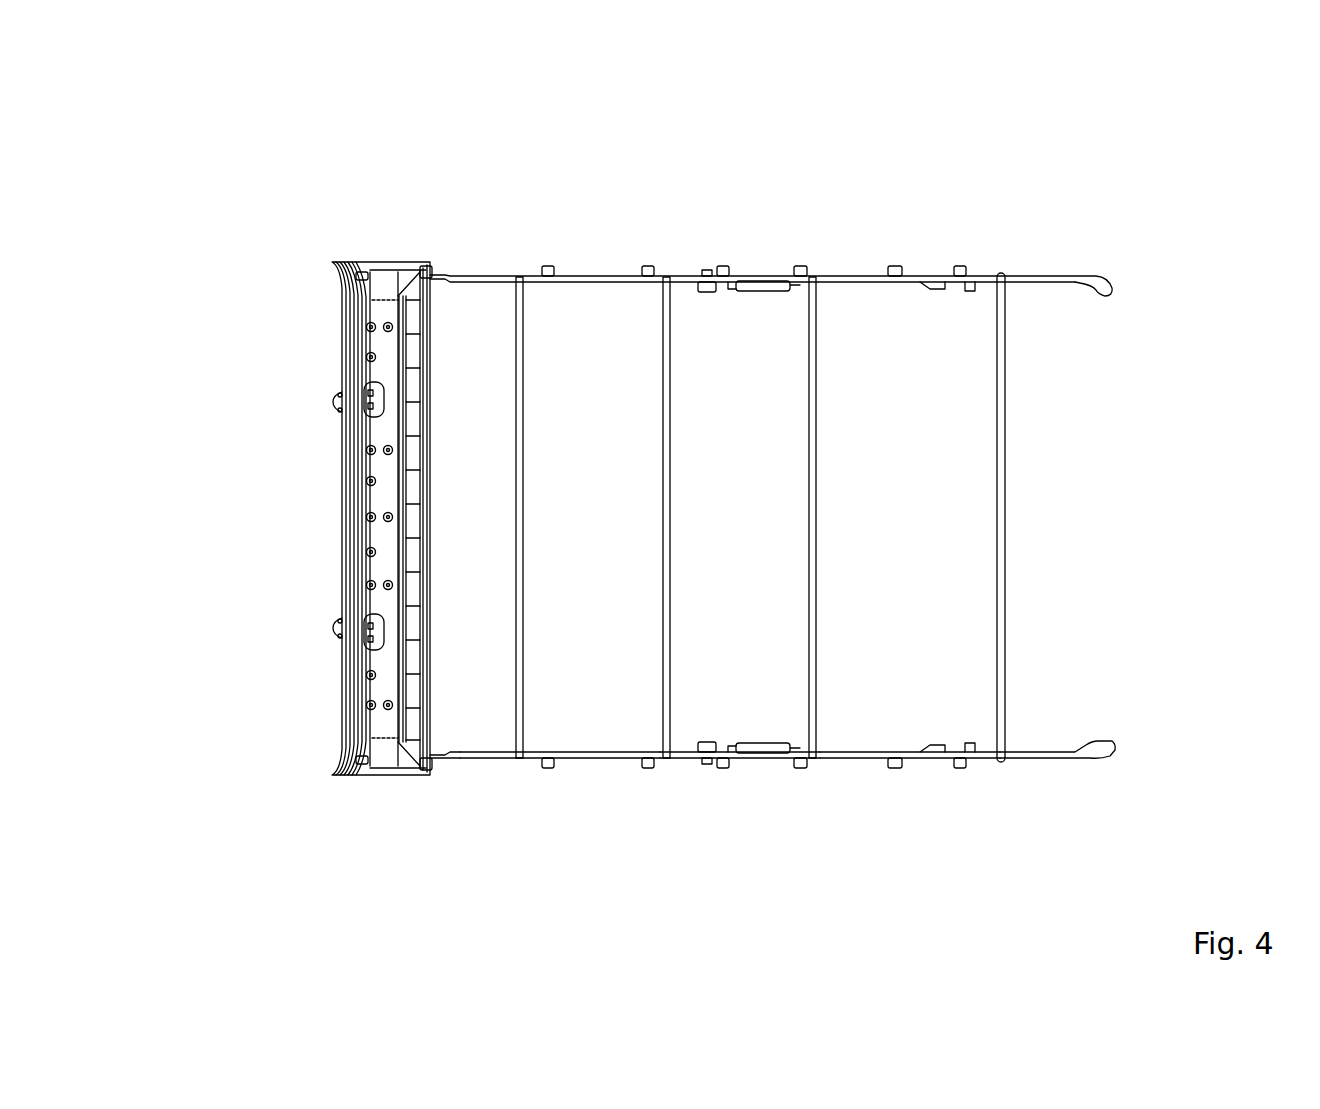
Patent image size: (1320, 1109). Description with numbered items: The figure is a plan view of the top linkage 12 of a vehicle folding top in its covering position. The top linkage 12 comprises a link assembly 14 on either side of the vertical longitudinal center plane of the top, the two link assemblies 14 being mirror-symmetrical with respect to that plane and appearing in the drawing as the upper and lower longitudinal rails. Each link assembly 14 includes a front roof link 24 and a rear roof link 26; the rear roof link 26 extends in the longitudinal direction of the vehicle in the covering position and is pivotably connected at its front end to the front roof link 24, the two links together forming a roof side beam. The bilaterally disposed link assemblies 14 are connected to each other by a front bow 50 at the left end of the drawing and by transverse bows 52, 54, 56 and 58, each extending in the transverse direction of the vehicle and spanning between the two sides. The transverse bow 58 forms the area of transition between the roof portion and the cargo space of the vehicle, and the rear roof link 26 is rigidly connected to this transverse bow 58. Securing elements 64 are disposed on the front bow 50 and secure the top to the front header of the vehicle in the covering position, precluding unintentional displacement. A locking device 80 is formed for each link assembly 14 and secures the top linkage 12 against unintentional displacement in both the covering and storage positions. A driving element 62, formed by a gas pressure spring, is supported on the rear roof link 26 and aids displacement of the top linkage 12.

The top linkage 12 is at (886, 148).
The link assembly 14 is at (1054, 270).
The front roof link 24 is at (587, 772).
The rear roof link 26 is at (912, 762).
The front bow 50 is at (384, 285).
The transverse bow 52 is at (516, 370).
The transverse bow 54 is at (662, 400).
The transverse bow 56 is at (808, 405).
The transverse bow 58 is at (995, 425).
The driving element 62 is at (752, 287).
The securing element 64 is at (338, 628).
The locking device 80 is at (705, 278).